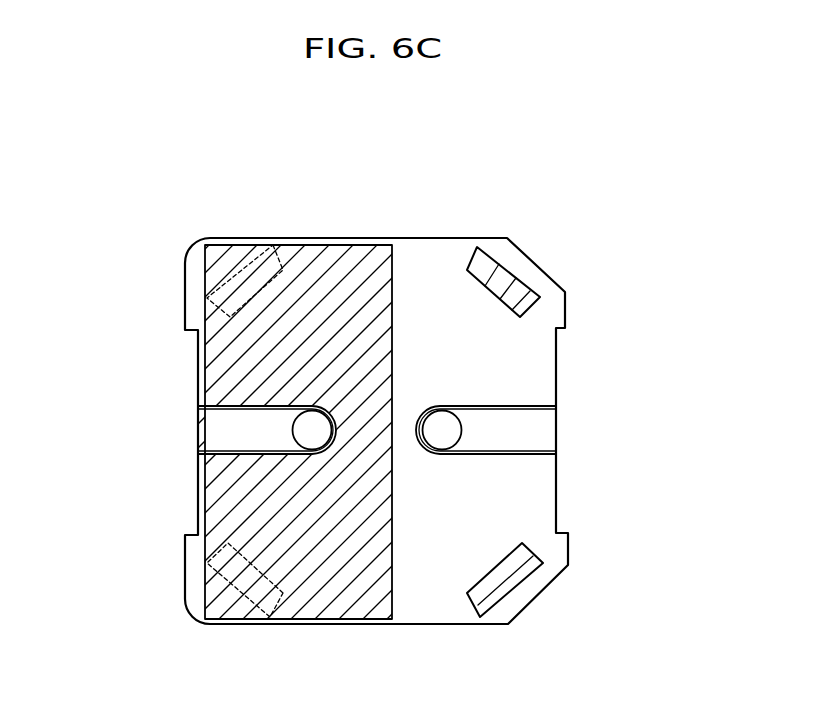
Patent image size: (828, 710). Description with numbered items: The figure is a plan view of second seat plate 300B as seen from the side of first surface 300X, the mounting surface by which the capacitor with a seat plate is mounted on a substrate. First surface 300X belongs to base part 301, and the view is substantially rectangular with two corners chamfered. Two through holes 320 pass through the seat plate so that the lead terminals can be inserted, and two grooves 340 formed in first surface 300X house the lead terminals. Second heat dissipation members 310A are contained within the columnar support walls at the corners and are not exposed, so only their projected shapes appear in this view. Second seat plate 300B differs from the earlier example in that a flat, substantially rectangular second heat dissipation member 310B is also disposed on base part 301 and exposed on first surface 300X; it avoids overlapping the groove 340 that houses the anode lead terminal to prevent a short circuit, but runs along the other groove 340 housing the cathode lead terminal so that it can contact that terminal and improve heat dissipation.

The second seat plate 300B is at (407, 107).
The base part 301 is at (428, 268).
The second heat dissipation member 310A is at (262, 258).
The second heat dissipation member 310B is at (292, 268).
The through hole 320 is at (318, 431).
The groove 340 is at (507, 437).
The first surface 300X is at (510, 366).